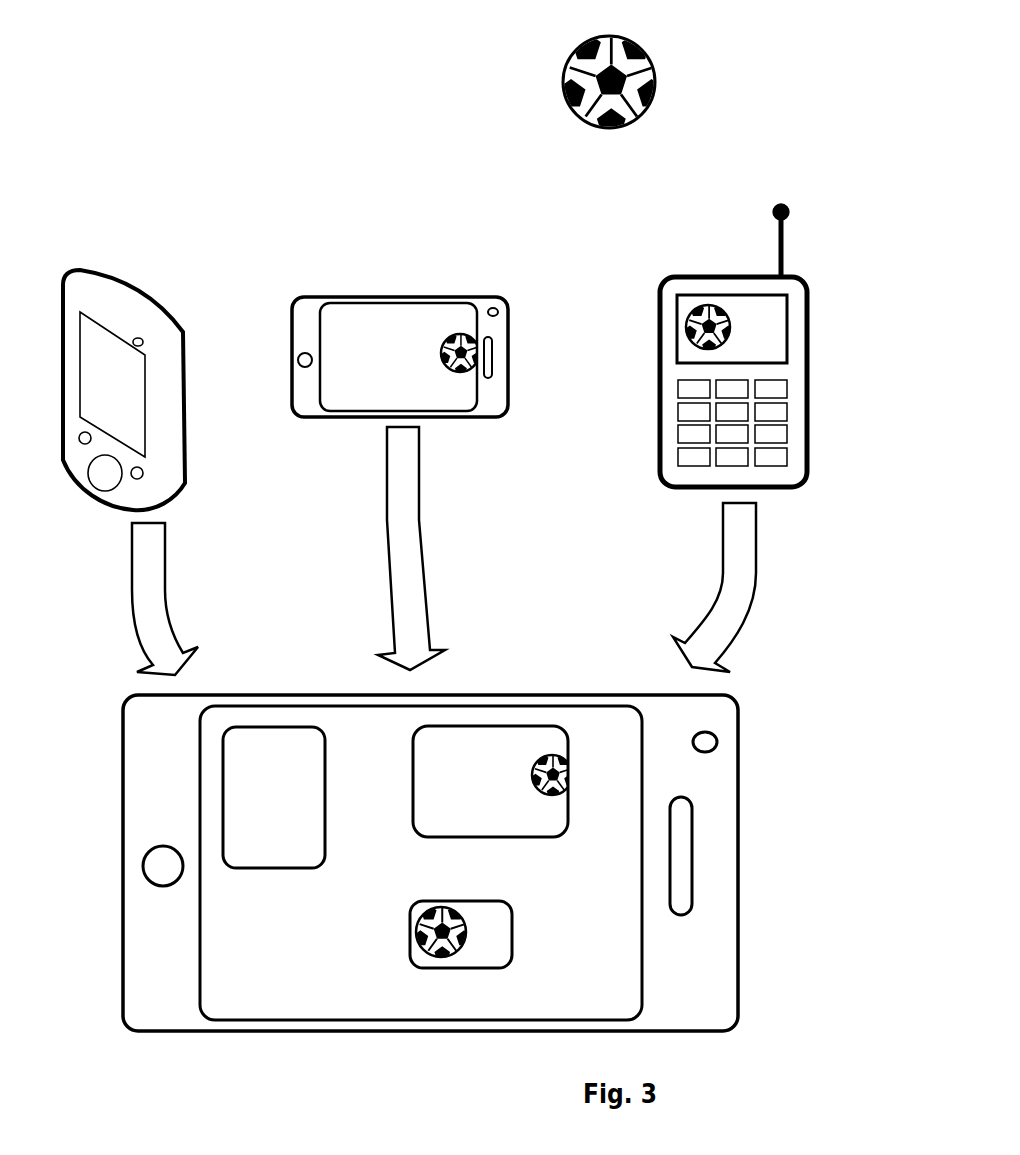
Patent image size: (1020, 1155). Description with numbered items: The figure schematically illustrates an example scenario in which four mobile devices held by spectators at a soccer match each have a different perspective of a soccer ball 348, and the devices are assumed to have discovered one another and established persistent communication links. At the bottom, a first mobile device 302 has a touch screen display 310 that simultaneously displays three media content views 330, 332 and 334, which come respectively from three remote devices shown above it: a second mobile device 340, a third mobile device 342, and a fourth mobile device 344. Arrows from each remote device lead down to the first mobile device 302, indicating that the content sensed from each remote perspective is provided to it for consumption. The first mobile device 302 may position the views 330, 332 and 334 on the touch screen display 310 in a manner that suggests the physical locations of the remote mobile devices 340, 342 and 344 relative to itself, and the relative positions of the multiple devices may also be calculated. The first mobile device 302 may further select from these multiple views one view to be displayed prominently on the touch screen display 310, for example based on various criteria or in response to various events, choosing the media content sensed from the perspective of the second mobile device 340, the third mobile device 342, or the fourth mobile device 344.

The first mobile device 302 is at (739, 857).
The touch screen display 310 is at (643, 938).
The media content view 330 is at (326, 793).
The media content view 332 is at (569, 805).
The media content view 334 is at (513, 942).
The second mobile device 340 is at (183, 350).
The third mobile device 342 is at (510, 350).
The fourth mobile device 344 is at (810, 338).
The soccer ball 348 is at (655, 67).